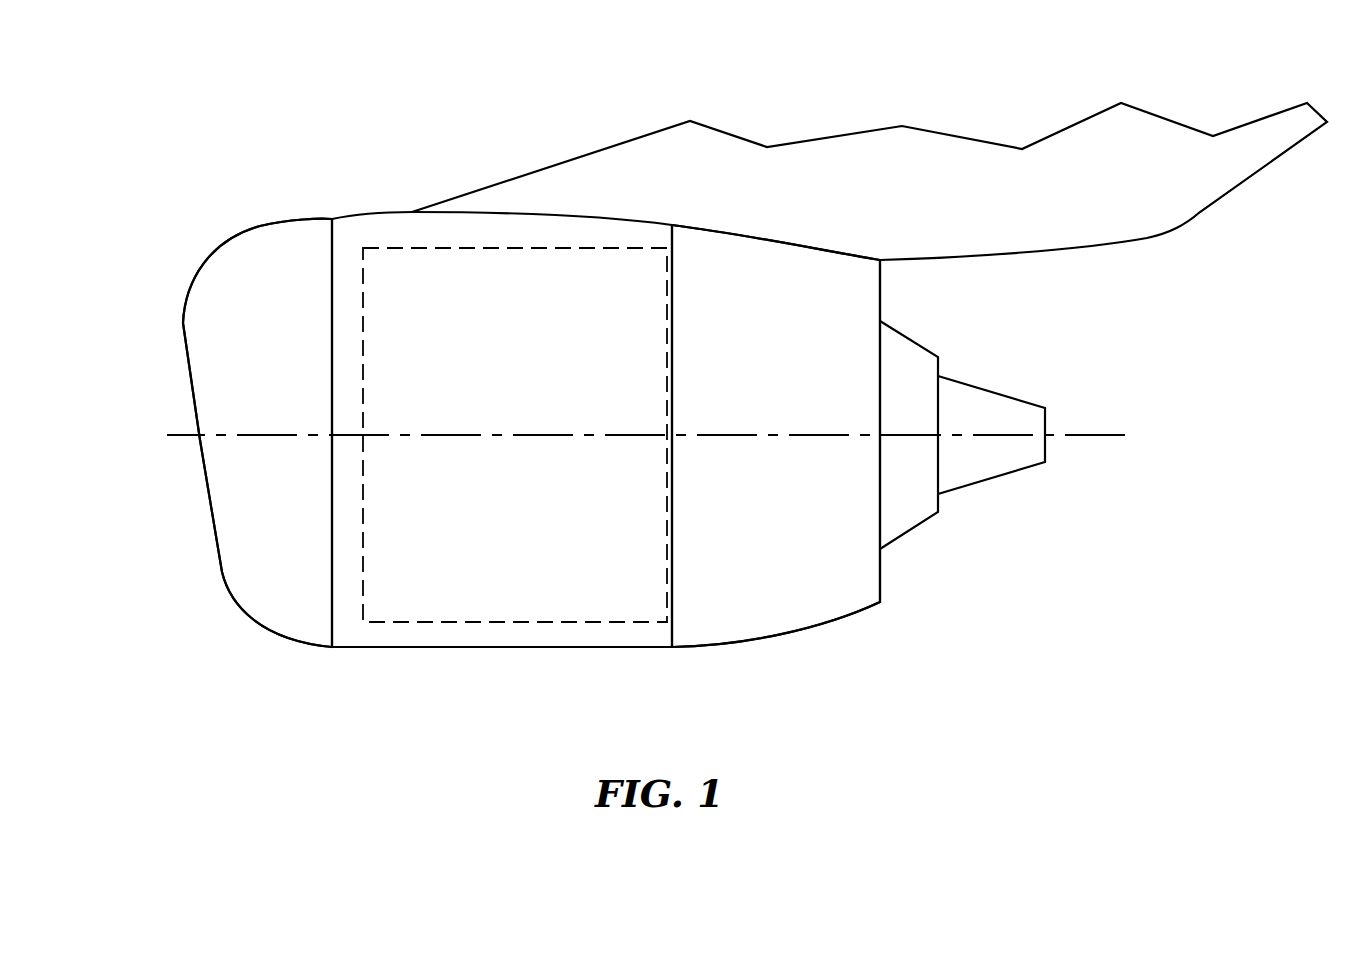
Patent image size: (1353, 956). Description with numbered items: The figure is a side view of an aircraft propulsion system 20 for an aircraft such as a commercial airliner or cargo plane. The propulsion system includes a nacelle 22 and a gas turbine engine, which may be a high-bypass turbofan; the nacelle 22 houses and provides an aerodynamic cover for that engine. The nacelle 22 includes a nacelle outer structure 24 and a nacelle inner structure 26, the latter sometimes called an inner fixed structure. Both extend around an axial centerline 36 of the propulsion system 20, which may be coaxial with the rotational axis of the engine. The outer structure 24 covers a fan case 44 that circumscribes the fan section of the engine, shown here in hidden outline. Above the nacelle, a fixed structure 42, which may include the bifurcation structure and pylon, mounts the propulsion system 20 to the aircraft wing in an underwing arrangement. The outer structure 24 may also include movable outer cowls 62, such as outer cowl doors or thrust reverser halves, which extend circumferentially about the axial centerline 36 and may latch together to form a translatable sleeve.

The aircraft propulsion system 20 is at (185, 138).
The nacelle 22 is at (352, 198).
The nacelle outer structure 24 is at (393, 657).
The nacelle inner structure 26 is at (911, 543).
The axial centerline 36 is at (1113, 437).
The fixed structure 42 is at (568, 156).
The fan case 44 is at (473, 623).
The outer cowl 62 is at (772, 646).